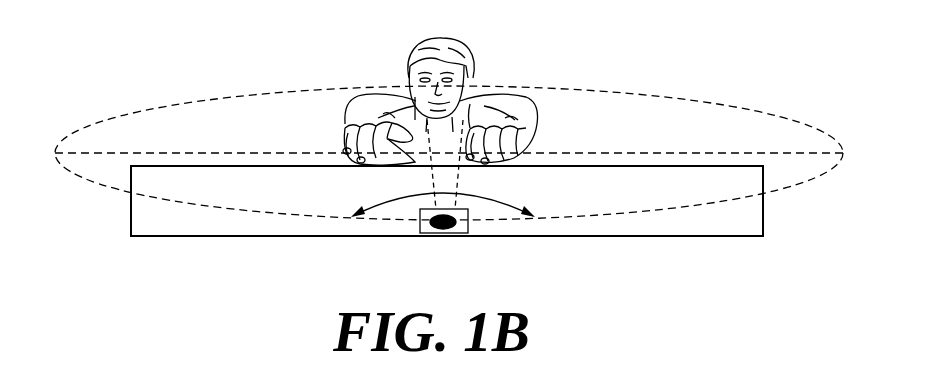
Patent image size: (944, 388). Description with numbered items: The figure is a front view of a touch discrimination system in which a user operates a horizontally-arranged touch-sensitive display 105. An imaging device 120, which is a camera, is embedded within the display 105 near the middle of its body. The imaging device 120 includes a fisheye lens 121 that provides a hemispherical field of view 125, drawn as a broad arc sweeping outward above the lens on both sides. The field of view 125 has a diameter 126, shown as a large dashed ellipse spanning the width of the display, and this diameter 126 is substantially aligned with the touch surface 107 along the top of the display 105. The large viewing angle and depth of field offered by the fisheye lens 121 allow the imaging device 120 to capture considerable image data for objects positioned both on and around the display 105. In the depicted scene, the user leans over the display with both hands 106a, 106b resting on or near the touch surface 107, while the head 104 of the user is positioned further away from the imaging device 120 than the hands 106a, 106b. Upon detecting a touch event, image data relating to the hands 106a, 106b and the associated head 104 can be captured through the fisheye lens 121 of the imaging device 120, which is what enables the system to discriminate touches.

The head 104 is at (409, 67).
The touch-sensitive display 105 is at (262, 237).
The hand 106a is at (345, 146).
The hand 106b is at (536, 141).
The touch surface 107 is at (250, 160).
The imaging device 120 is at (420, 226).
The fisheye lens 121 is at (447, 230).
The hemispherical field of view 125 is at (510, 203).
The diameter 126 is at (725, 154).